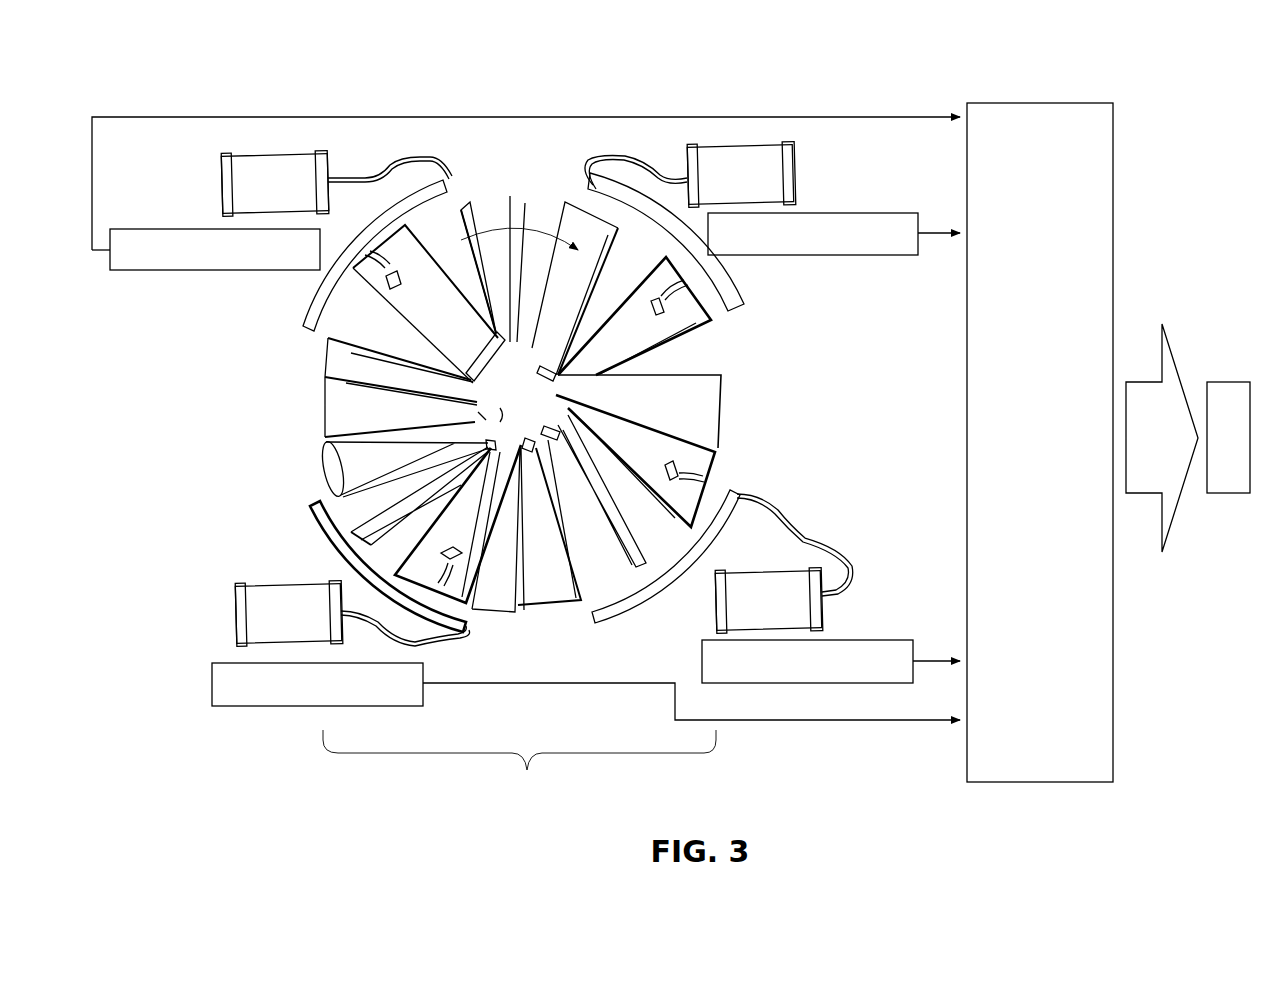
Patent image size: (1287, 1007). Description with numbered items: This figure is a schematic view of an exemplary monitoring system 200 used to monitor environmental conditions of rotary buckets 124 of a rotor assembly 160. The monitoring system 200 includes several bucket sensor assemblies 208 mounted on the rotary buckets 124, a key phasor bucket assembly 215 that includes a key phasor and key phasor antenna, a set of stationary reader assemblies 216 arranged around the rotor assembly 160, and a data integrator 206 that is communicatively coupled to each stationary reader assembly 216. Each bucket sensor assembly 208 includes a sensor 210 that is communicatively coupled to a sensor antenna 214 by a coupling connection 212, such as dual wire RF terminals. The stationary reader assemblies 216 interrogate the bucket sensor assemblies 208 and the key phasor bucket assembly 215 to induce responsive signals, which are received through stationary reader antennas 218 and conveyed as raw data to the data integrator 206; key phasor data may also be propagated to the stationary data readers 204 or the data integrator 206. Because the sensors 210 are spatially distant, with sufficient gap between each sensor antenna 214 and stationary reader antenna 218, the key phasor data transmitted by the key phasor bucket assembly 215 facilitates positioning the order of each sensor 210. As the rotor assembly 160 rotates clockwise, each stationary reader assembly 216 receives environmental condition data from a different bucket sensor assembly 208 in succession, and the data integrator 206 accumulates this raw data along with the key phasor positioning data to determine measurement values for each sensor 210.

The monitoring system 200 is at (186, 88).
The stationary data reader 204 is at (268, 153).
The data integrator 206 is at (1040, 103).
The bucket sensor assembly 208 is at (469, 610).
The sensor 210 is at (720, 437).
The coupling connection 212 is at (705, 462).
The sensor antenna 214 is at (712, 484).
The key phasor bucket assembly 215 is at (326, 472).
The stationary reader assembly 216 is at (468, 178).
The stationary reader antenna 218 is at (745, 306).
The rotary bucket 124 is at (688, 313).
The rotor assembly 160 is at (527, 770).